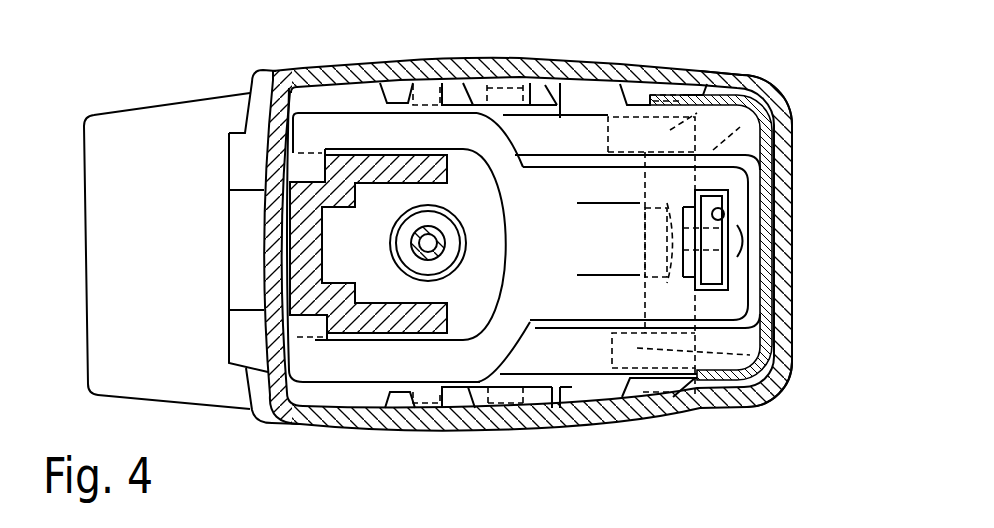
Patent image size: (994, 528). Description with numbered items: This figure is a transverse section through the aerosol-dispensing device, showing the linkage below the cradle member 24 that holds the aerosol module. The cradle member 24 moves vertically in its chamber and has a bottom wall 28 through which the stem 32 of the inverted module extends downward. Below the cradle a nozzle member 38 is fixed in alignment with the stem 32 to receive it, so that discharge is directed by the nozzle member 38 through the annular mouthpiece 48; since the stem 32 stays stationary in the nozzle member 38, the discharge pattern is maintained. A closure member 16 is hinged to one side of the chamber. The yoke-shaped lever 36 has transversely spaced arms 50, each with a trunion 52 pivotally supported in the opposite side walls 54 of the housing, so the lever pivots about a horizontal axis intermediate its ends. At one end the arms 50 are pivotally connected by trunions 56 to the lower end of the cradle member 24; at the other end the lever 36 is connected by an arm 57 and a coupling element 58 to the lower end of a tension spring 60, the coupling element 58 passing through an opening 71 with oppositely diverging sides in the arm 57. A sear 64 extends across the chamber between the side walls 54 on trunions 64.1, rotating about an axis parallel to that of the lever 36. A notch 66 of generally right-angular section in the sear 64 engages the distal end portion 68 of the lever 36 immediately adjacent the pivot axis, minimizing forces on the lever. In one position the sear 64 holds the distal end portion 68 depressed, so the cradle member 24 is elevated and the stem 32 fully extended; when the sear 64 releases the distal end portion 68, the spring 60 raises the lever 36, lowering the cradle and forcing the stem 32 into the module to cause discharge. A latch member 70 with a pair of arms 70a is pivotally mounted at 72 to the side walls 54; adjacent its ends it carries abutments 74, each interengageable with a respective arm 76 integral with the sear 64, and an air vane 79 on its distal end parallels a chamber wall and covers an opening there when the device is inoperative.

The annular mouthpiece 48 is at (132, 127).
The arms 50 is at (347, 130).
The bottom wall 28 is at (388, 118).
The trunion 52 is at (402, 62).
The nozzle member 38 is at (447, 62).
The side walls 54 is at (482, 58).
The pivot mounting 72 is at (517, 63).
The arms 70a is at (567, 63).
The sear 64 is at (650, 68).
The trunions 64.1 is at (680, 68).
The arm 76 is at (745, 75).
The notch 66 is at (793, 87).
The air vane 79 is at (787, 128).
The opening 71 is at (727, 205).
The tension spring 60 is at (770, 232).
The coupling element 58 is at (710, 260).
The arm 57 is at (737, 312).
The trunions 56 is at (283, 160).
The stem 32 is at (417, 240).
The closure member 16 is at (267, 235).
The cradle member 24 is at (293, 258).
The latch member 70 is at (535, 162).
The abutments 74 is at (588, 160).
The yoke-shaped lever 36 is at (540, 258).
The distal end portion 68 is at (645, 243).